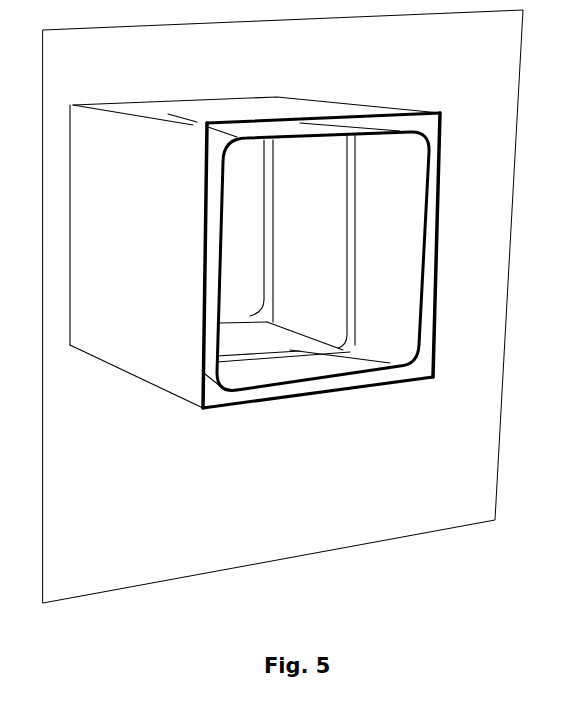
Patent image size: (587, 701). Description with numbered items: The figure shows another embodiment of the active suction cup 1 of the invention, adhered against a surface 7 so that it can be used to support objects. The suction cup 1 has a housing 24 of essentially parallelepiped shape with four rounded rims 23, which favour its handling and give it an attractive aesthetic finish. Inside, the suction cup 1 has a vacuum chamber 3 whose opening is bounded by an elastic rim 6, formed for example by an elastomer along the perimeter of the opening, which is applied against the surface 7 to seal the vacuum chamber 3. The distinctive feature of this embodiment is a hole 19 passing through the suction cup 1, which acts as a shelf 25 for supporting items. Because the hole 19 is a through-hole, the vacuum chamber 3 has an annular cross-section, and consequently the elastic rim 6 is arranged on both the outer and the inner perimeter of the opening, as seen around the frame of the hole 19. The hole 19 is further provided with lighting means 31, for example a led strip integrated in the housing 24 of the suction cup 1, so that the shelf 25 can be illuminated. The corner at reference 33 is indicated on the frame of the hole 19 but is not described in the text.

The suction cup 1 is at (140, 74).
The vacuum chamber 3 is at (407, 363).
The elastic rim 6 is at (380, 373).
The surface 7 is at (494, 53).
The hole 19 is at (312, 162).
The rounded rims 23 is at (193, 125).
The housing 24 is at (137, 355).
The shelf 25 is at (267, 367).
The lighting means 31 is at (350, 258).
The right frame edge 33 is at (428, 100).